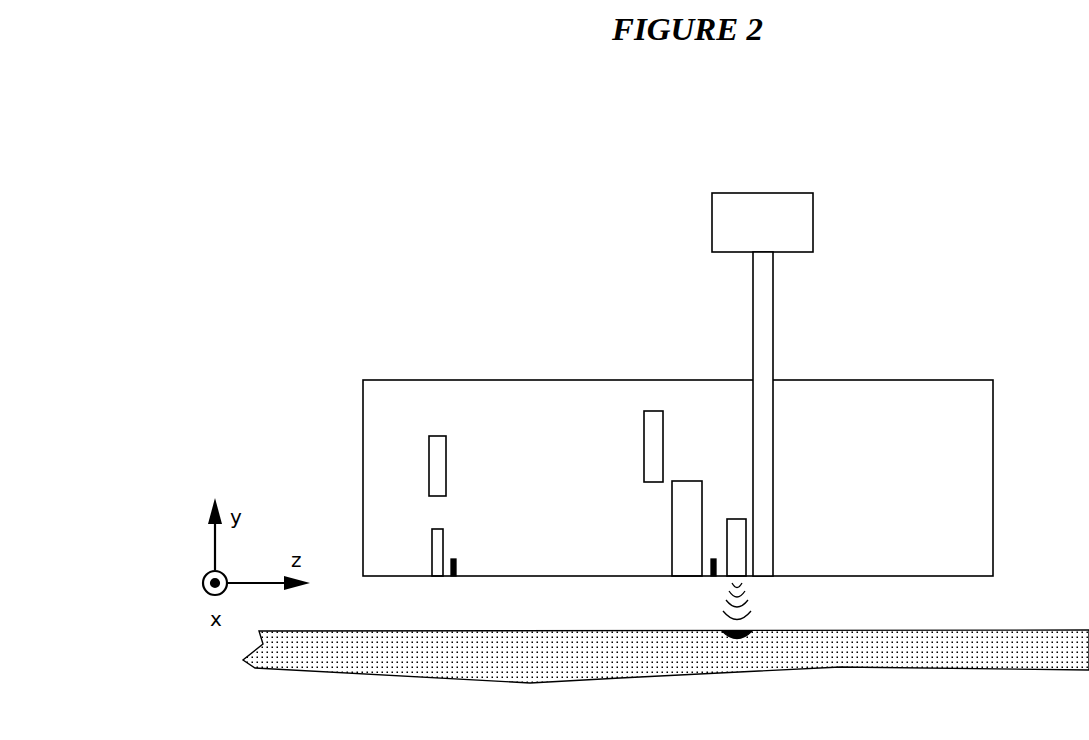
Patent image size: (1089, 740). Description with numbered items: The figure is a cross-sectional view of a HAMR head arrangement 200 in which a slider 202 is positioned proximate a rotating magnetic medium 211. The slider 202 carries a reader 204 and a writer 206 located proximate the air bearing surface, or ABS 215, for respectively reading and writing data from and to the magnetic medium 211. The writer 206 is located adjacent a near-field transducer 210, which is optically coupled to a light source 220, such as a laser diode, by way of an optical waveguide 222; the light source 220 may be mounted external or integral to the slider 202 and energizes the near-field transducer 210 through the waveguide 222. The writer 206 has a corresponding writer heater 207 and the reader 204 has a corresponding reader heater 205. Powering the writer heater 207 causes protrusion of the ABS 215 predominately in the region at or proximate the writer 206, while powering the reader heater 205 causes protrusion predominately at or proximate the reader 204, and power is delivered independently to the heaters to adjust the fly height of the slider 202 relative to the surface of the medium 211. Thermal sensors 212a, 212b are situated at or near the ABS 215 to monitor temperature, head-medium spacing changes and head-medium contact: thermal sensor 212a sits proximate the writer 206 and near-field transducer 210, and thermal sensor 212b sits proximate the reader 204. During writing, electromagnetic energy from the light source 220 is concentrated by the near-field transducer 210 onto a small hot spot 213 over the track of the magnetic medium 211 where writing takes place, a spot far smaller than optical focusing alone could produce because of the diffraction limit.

The HAMR head arrangement 200 is at (444, 230).
The slider 202 is at (1023, 352).
The reader 204 is at (432, 545).
The reader heater 205 is at (446, 467).
The writer 206 is at (672, 537).
The writer heater 207 is at (644, 455).
The near-field transducer 210 is at (735, 519).
The magnetic medium 211 is at (1050, 630).
The thermal sensor 212a is at (712, 578).
The thermal sensor 212b is at (452, 578).
The hot spot 213 is at (735, 637).
The ABS 215 is at (890, 577).
The light source 220 is at (813, 218).
The optical waveguide 222 is at (773, 322).